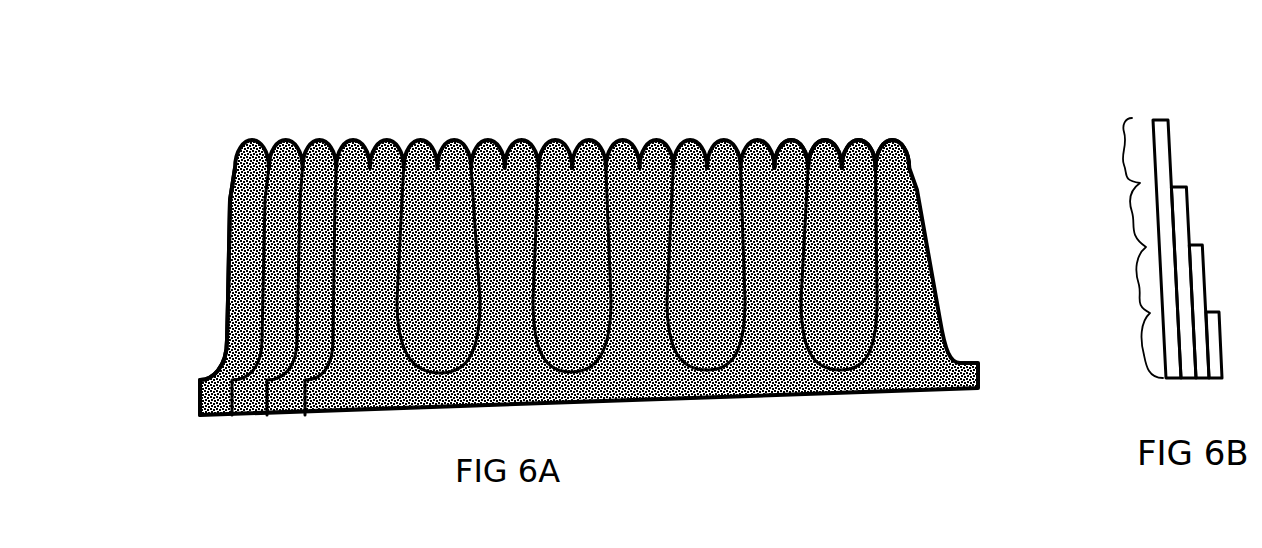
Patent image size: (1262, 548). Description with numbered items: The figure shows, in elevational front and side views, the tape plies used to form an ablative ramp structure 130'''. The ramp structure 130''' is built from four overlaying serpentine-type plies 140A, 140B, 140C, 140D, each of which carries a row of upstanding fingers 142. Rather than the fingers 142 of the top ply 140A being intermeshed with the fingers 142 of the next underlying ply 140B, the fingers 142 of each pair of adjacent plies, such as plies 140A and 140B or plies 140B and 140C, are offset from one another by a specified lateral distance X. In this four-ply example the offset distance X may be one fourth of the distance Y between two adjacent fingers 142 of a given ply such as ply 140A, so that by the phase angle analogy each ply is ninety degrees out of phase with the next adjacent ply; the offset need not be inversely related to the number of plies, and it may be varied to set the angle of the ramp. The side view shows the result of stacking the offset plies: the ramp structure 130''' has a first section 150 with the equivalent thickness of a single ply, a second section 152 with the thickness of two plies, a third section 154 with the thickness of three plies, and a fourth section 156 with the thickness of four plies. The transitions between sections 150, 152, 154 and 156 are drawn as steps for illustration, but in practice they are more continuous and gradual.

In FIG. 6A, the ramp structure 130''' is at (631, 238).
In FIG. 6B, the ramp structure 130''' is at (1121, 291).
In FIG. 6A, the top ply 140A is at (297, 416).
In FIG. 6A, the second ply 140B is at (262, 414).
In FIG. 6A, the third ply 140C is at (222, 416).
In FIG. 6A, the fourth ply 140D is at (197, 413).
In FIG. 6A, the fingers 142 is at (892, 140).
In FIG. 6B, the first section 150 is at (1122, 148).
In FIG. 6B, the second section 152 is at (1132, 208).
In FIG. 6B, the third section 154 is at (1140, 283).
In FIG. 6B, the fourth section 156 is at (1147, 348).
In FIG. 6A, the offset distance X is at (632, 97).
In FIG. 6A, the distance between adjacent fingers Y is at (613, 61).